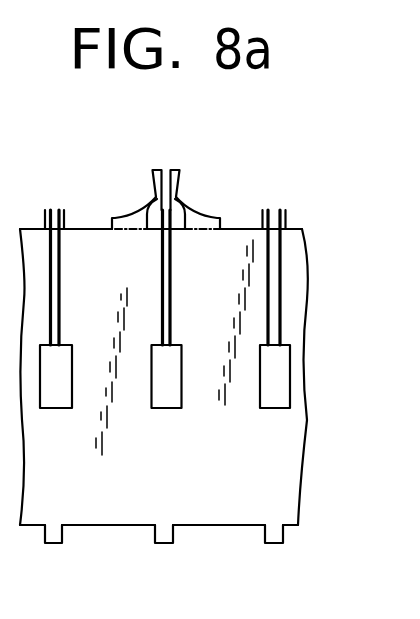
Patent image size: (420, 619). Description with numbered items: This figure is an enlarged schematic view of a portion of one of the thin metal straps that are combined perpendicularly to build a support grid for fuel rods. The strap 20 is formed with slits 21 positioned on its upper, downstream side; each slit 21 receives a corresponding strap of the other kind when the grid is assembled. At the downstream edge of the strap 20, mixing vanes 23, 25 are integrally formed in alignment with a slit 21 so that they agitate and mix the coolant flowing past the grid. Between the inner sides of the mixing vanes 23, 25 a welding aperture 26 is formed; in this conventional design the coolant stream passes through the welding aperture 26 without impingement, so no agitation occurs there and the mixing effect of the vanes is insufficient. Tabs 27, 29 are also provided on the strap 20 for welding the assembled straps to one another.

The strap 20 is at (270, 452).
The slit 21 is at (61, 283).
The mixing vane 23 is at (176, 179).
The mixing vane 25 is at (156, 179).
The welding aperture 26 is at (150, 192).
The tab 27 is at (183, 192).
The tab 29 is at (174, 537).